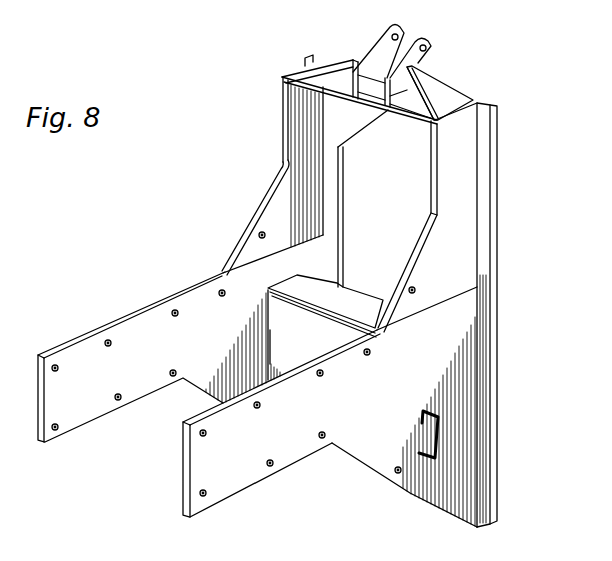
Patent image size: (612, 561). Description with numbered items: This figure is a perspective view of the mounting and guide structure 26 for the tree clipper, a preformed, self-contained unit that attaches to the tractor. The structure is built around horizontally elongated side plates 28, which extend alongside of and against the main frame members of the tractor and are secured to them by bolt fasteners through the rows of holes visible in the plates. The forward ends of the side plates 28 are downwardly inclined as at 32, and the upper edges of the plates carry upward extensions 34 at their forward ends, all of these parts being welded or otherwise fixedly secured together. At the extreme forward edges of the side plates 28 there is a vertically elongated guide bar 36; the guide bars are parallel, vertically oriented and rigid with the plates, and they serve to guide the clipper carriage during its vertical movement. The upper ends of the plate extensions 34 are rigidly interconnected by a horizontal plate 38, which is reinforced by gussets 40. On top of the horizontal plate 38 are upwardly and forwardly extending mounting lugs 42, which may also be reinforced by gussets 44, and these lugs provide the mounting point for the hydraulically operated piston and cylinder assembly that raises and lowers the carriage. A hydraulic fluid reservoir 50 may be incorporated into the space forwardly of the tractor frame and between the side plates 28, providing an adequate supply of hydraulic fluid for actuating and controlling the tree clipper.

The mounting and guide structure 26 is at (507, 160).
The side plates 28 is at (128, 337).
The downwardly inclined forward end 32 is at (417, 482).
The upward extensions 34 is at (303, 187).
The guide bar 36 is at (488, 222).
The horizontal plate 38 is at (413, 105).
The gussets 40 is at (350, 122).
The mounting lugs 42 is at (377, 58).
The gussets 44 is at (440, 93).
The hydraulic fluid reservoir 50 is at (347, 303).